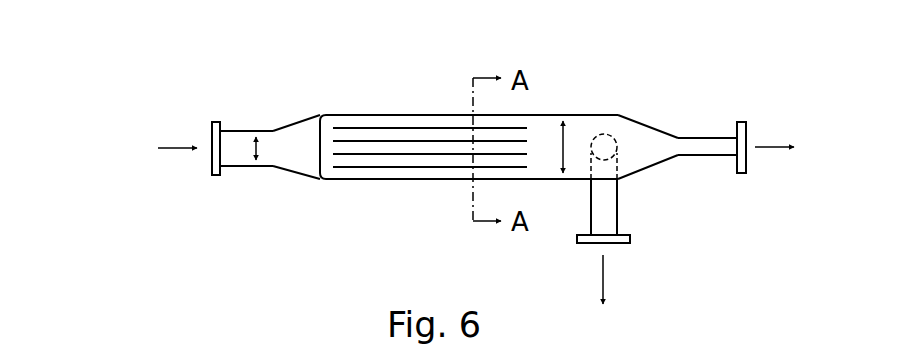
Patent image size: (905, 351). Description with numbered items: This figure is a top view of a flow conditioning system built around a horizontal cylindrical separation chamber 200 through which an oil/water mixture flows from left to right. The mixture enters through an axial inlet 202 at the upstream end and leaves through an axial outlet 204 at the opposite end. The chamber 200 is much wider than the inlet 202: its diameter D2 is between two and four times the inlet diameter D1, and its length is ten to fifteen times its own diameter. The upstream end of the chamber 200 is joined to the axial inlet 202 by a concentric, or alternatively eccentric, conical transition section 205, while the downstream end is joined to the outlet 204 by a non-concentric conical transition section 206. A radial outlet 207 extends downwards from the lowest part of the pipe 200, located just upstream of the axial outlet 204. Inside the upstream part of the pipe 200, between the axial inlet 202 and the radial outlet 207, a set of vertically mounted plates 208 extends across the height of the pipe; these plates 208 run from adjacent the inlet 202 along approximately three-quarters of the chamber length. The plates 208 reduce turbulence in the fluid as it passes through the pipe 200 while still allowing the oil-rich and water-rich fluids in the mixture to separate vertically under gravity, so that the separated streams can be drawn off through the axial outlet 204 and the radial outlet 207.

The horizontal cylindrical separation chamber 200 is at (388, 110).
The axial inlet 202 is at (235, 168).
The axial outlet 204 is at (742, 132).
The concentric conical transition section 205 is at (295, 117).
The non-concentric conical transition section 206 is at (645, 120).
The radial outlet 207 is at (618, 213).
The vertically mounted plates 208 is at (385, 155).
The inlet diameter D1 is at (248, 147).
The body diameter D2 is at (563, 147).